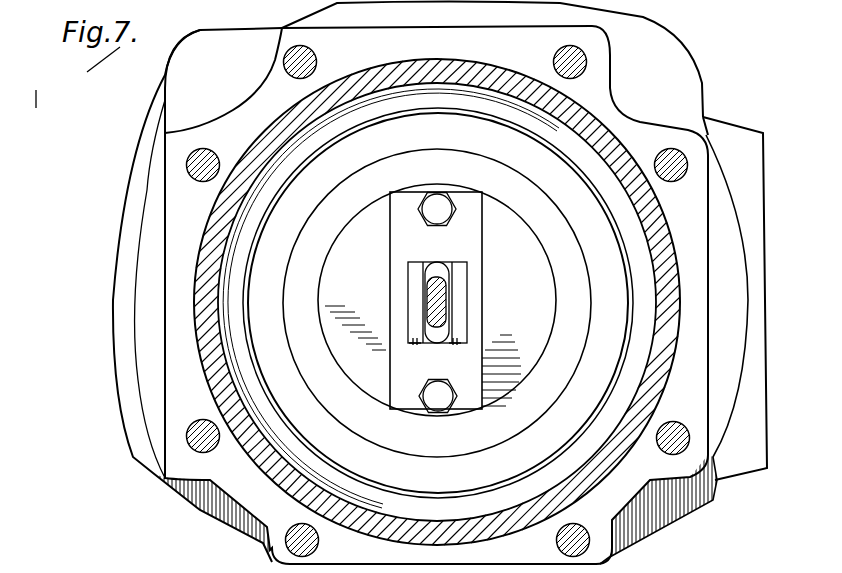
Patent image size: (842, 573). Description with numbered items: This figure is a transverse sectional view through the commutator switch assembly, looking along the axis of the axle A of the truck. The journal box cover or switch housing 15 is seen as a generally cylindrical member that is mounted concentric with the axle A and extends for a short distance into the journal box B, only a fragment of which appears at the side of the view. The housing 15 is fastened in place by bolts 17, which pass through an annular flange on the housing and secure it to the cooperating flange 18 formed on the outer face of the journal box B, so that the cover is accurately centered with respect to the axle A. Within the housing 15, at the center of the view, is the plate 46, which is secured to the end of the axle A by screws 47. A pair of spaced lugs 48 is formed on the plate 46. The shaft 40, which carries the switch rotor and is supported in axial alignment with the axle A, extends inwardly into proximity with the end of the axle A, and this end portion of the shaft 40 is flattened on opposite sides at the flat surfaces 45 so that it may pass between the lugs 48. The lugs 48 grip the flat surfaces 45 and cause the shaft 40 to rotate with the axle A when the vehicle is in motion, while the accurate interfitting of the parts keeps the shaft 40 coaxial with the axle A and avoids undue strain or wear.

The housing 15 is at (462, 61).
The bolts 17 is at (313, 56).
The cooperating flange 18 is at (173, 232).
The shaft 40 is at (450, 318).
The flat surfaces 45 is at (425, 290).
The plate 46 is at (470, 247).
The screws 47 is at (445, 205).
The lugs 48 is at (452, 344).
The axle A is at (537, 262).
The journal box B is at (722, 135).